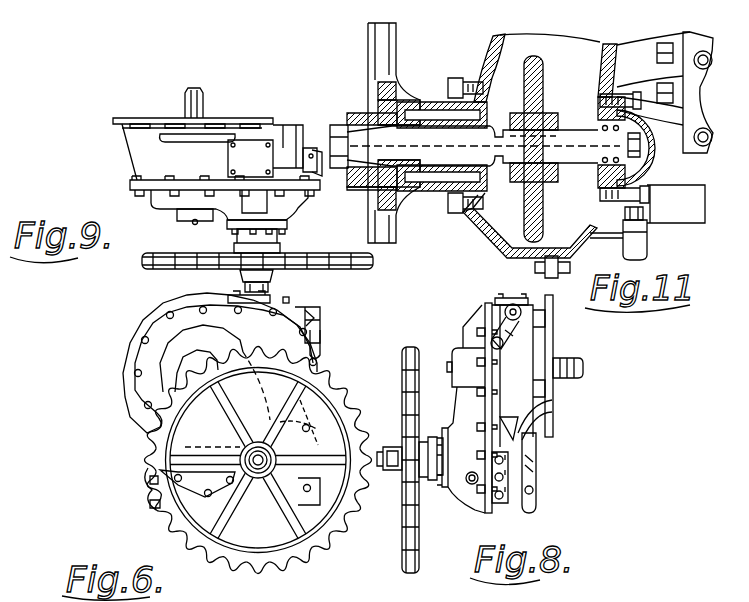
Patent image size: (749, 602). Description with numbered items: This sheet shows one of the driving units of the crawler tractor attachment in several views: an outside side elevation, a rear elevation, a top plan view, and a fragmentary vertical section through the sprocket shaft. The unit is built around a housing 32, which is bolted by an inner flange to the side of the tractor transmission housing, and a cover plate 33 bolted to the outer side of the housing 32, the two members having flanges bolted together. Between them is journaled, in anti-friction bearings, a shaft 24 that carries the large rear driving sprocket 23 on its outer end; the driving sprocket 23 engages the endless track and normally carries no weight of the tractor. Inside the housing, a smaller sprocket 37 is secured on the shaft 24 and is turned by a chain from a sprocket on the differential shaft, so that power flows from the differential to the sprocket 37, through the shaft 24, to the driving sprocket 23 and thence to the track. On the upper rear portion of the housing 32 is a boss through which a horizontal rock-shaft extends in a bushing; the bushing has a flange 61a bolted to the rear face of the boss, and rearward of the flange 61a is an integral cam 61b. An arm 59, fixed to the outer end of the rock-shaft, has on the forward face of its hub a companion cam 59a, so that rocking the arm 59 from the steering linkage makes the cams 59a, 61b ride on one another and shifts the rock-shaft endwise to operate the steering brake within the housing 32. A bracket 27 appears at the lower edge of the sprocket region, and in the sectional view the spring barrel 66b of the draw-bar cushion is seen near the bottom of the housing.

In FIG. 9, the rear driving sprocket 23 is at (370, 269).
In FIG. 11, the rear driving sprocket 23 is at (368, 52).
In FIG. 6, the rear driving sprocket 23 is at (150, 468).
In FIG. 8, the rear driving sprocket 23 is at (402, 370).
In FIG. 9, the shaft 24 is at (336, 121).
In FIG. 11, the shaft 24 is at (338, 120).
In FIG. 6, the shaft 24 is at (258, 478).
In FIG. 8, the shaft 24 is at (384, 472).
In FIG. 6, the bracket 27 is at (165, 510).
In FIG. 9, the housing 32 is at (122, 150).
In FIG. 11, the housing 32 is at (620, 45).
In FIG. 6, the housing 32 is at (128, 405).
In FIG. 8, the housing 32 is at (510, 490).
In FIG. 9, the cover plate 33 is at (176, 210).
In FIG. 11, the cover plate 33 is at (494, 46).
In FIG. 8, the cover plate 33 is at (463, 493).
In FIG. 11, the sprocket 37 is at (527, 92).
In FIG. 9, the arm 59 is at (328, 177).
In FIG. 11, the arm 59 is at (363, 197).
In FIG. 6, the arm 59 is at (320, 345).
In FIG. 8, the arm 59 is at (505, 334).
In FIG. 6, the cam 59a is at (320, 320).
In FIG. 9, the flange 61a is at (297, 125).
In FIG. 6, the flange 61a is at (301, 297).
In FIG. 8, the flange 61a is at (517, 327).
In FIG. 6, the cam 61b is at (318, 308).
In FIG. 11, the spring barrel 66b is at (520, 267).